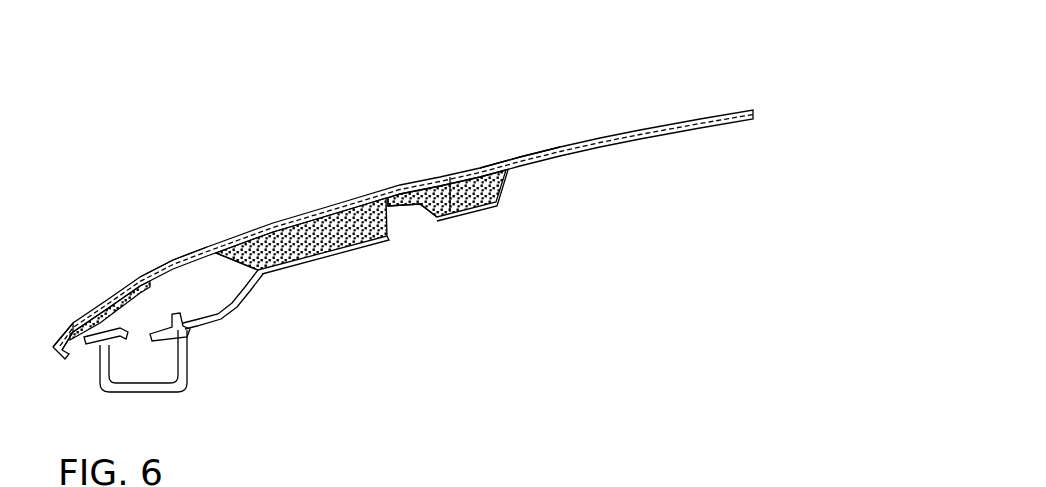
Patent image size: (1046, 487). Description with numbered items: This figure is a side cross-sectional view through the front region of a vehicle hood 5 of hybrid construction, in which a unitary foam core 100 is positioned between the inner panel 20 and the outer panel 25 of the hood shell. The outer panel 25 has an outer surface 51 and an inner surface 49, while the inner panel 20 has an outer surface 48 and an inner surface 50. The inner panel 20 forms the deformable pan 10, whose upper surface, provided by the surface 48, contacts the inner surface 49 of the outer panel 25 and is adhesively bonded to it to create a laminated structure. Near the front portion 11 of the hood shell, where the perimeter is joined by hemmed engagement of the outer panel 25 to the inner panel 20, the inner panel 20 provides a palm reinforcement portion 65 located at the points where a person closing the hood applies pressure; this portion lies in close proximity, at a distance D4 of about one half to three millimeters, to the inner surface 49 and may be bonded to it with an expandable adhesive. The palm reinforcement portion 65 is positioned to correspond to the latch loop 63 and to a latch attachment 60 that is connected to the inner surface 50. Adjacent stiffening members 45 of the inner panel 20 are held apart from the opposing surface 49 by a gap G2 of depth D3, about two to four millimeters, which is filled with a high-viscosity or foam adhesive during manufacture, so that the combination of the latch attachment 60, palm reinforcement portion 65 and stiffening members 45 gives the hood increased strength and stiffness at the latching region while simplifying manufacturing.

The vehicle hood 5 is at (633, 63).
The deformable pan 10 is at (603, 192).
The inner panel 20 is at (663, 135).
The unitary foam core 100 is at (487, 162).
The front portion 11 is at (55, 345).
The palm reinforcement portion 65 is at (183, 262).
The outer panel 25 is at (272, 217).
The inner surface of the outer panel 49 is at (346, 216).
The gap G2 is at (267, 233).
The palm reinforcement spacing D4 is at (155, 313).
The gap depth D3 is at (407, 250).
The stiffening member 45 is at (415, 208).
The outer surface of the inner panel 48 is at (445, 177).
The outer surface of the outer panel 51 is at (430, 178).
The inner surface of the inner panel 50 is at (476, 209).
The latch attachment 60 is at (250, 297).
The latch loop 63 is at (187, 350).